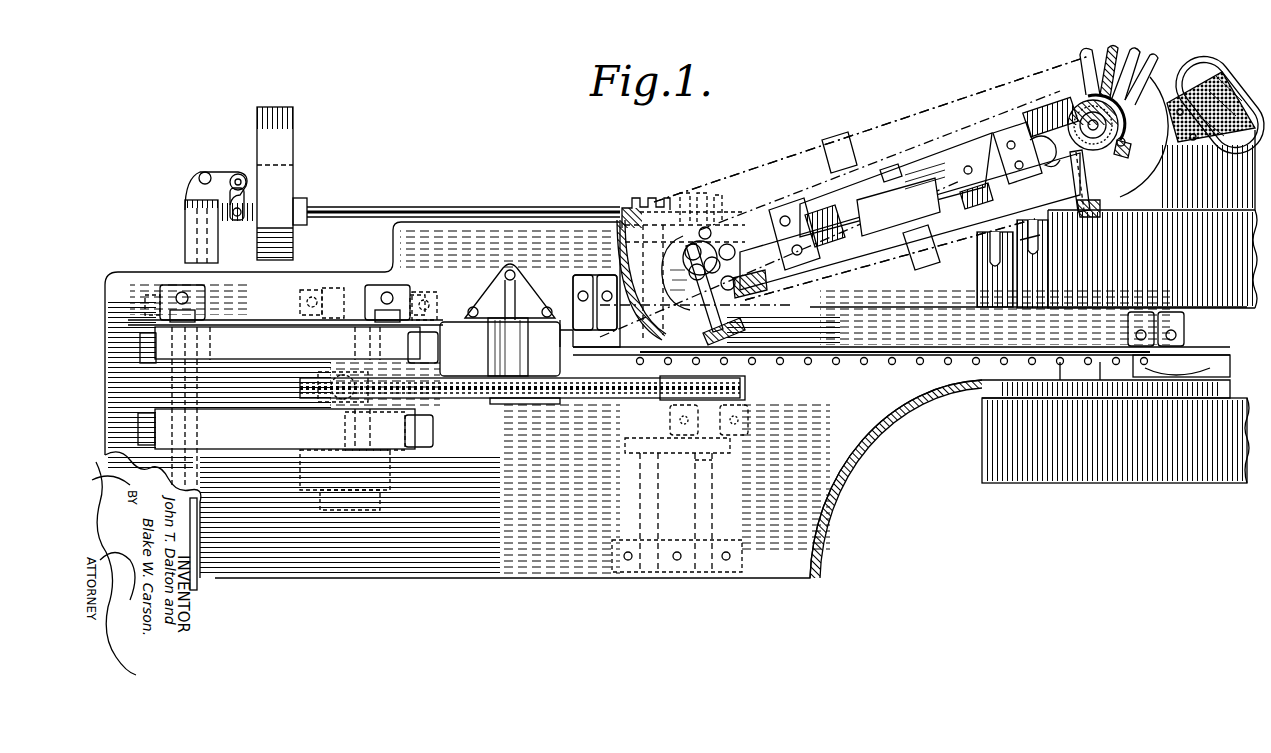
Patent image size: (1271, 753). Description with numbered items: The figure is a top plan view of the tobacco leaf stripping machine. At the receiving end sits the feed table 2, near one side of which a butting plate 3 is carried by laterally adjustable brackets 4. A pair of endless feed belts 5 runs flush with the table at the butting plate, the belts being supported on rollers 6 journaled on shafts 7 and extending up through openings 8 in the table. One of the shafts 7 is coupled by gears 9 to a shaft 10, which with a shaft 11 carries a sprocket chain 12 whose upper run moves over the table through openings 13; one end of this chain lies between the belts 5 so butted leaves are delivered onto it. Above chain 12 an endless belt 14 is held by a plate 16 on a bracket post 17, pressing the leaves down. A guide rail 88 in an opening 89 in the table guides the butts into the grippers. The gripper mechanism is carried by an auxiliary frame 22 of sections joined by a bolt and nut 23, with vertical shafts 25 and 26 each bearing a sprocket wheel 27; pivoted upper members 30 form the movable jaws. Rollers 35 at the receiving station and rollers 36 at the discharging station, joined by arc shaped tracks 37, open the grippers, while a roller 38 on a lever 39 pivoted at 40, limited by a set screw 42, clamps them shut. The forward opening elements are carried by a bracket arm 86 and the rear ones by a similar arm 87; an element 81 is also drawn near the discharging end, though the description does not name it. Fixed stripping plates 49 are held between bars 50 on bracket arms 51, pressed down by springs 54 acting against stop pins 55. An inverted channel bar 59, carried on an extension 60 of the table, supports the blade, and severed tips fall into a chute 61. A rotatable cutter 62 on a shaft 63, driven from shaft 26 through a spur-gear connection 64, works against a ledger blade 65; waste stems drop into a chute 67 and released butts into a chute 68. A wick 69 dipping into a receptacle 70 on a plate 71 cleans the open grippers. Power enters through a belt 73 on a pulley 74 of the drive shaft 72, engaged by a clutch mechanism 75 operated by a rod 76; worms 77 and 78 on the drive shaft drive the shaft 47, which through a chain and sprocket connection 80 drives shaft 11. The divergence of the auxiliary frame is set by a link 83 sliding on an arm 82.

The feed table 2 is at (520, 578).
The butting plate 3 is at (262, 320).
The brackets 4 is at (175, 285).
The endless feed belts 5 is at (245, 425).
The rollers 6 is at (412, 318).
The shafts 7 is at (380, 404).
The openings 8 is at (342, 310).
The gears 9 is at (395, 462).
The shaft 10 is at (325, 345).
The shaft 11 is at (712, 515).
The sprocket chain 12 is at (740, 382).
The openings 13 is at (745, 398).
The endless belt 14 is at (550, 404).
The plate 16 is at (470, 376).
The bracket post 17 is at (528, 353).
The auxiliary frame 22 is at (978, 148).
The bolt and nut 23 is at (892, 168).
The shaft 25 is at (784, 212).
The shaft 26 is at (1093, 122).
The sprocket wheel 27 is at (1047, 107).
The upper members 30 is at (838, 140).
The rollers 35 is at (622, 250).
The rollers 36 is at (1128, 60).
The arc shaped tracks 37 is at (1140, 90).
The roller 38 is at (708, 338).
The lever 39 is at (745, 306).
The pivot 40 is at (768, 283).
The set screw 42 is at (700, 237).
The shaft 47 is at (640, 487).
The plates 49 is at (1025, 350).
The bars 50 is at (968, 392).
The bracket arms 51 is at (578, 278).
The springs 54 is at (884, 366).
The stop pins 55 is at (985, 352).
The inverted channel bar 59 is at (1215, 368).
The extension 60 is at (984, 398).
The chute 61 is at (1058, 468).
The rotatable cutter 62 is at (1040, 262).
The shaft 63 is at (1078, 208).
The spur-gear connection 64 is at (1040, 115).
The ledger blade 65 is at (1035, 240).
The chute 67 is at (1160, 240).
The chute 68 is at (1185, 175).
The wick 69 is at (1228, 92).
The receptacle 70 is at (1208, 62).
The plate 71 is at (1172, 100).
The drive shaft 72 is at (492, 207).
The belt 73 is at (293, 135).
The pulley 74 is at (293, 172).
The clutch mechanism 75 is at (238, 175).
The rod 76 is at (200, 588).
The worm 77 is at (636, 208).
The worm 78 is at (710, 193).
The chain and sprocket connection 80 is at (730, 445).
The ring 81 is at (1124, 110).
The arm 82 is at (977, 295).
The link 83 is at (965, 212).
The bracket arm 86 is at (812, 215).
The arm 87 is at (1008, 135).
The guide rail 88 is at (563, 320).
The opening 89 is at (452, 330).